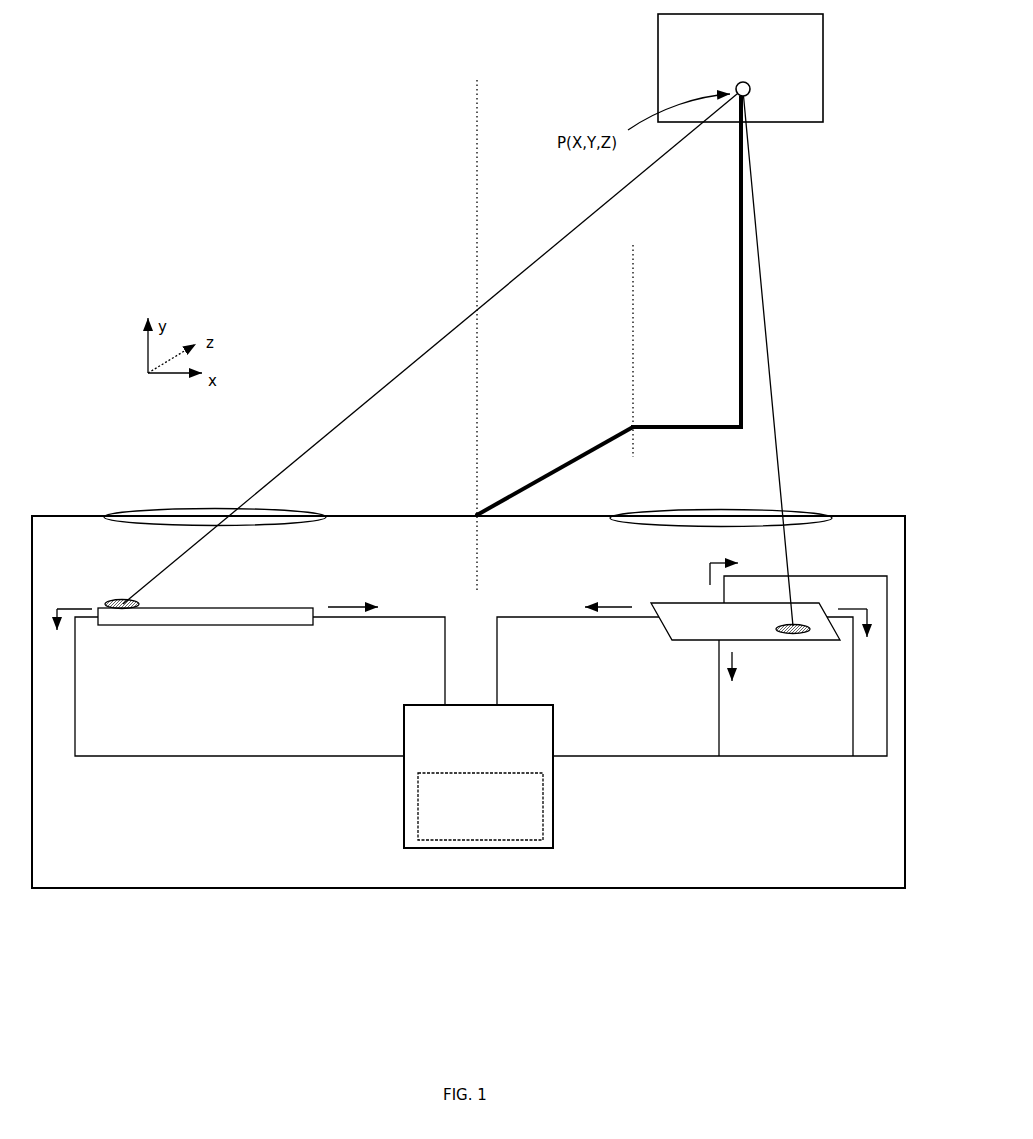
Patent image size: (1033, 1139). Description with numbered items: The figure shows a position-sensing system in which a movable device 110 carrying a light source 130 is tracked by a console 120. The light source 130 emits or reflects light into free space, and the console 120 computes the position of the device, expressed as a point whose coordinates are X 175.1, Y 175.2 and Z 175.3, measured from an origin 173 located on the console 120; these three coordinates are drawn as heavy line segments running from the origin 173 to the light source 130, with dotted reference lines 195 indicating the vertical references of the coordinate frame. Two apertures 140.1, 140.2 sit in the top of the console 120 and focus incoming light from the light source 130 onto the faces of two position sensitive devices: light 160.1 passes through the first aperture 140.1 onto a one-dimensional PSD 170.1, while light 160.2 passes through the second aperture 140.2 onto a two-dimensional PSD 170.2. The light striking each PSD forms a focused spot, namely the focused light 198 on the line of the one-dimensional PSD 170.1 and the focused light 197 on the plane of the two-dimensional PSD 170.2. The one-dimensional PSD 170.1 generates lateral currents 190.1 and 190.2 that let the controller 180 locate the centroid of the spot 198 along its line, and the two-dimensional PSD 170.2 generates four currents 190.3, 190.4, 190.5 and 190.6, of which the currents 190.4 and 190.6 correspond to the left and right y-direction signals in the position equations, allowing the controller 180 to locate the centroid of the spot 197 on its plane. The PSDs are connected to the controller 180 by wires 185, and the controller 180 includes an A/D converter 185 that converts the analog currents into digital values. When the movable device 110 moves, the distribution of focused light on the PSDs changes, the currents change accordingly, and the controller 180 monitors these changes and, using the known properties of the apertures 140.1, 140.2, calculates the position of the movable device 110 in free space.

The movable device 110 is at (740, 68).
The console 120 is at (468, 702).
The light source 130 is at (724, 80).
The aperture 140.1 is at (182, 499).
The aperture 140.2 is at (799, 499).
The light 160.1 is at (391, 376).
The light 160.2 is at (778, 368).
The one-dimensional position sensitive device 170.1 is at (231, 634).
The two-dimensional position sensitive device 170.2 is at (672, 643).
The origin 173 is at (458, 508).
The X coordinate 175.1 is at (708, 458).
The Y coordinate 175.2 is at (714, 381).
The Z coordinate 175.3 is at (617, 476).
The controller 180 is at (478, 776).
The A/D converter 185 is at (362, 757).
The current 190.1 is at (80, 588).
The current 190.2 is at (345, 578).
The current 190.3 is at (612, 578).
The current 190.4 is at (692, 560).
The current 190.5 is at (862, 583).
The current 190.6 is at (748, 677).
The reference axes lines 195 is at (487, 366).
The focused light 197 is at (793, 634).
The focused light 198 is at (121, 609).